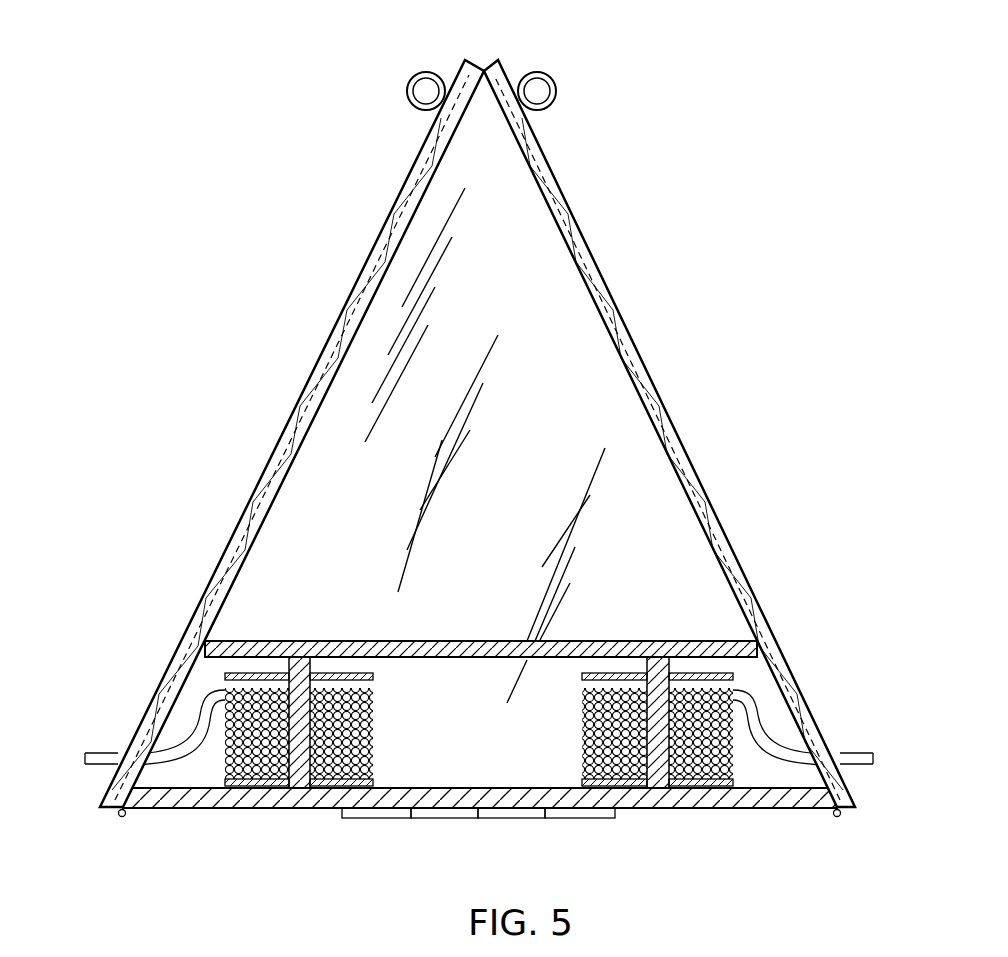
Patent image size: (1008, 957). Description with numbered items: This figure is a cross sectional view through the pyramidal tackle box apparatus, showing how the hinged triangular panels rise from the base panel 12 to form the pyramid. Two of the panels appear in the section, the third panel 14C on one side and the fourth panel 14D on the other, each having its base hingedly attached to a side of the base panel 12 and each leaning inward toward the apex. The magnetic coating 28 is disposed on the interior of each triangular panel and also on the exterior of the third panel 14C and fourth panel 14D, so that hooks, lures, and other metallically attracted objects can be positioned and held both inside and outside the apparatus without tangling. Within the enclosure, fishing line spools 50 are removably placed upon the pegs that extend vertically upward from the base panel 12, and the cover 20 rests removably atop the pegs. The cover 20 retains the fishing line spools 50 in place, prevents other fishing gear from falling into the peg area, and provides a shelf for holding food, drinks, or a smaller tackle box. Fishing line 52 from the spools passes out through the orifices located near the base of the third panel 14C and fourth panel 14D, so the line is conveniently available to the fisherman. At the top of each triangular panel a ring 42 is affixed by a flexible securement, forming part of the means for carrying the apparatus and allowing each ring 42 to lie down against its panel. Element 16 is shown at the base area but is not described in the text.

The base panel 12 is at (765, 809).
The third panel 14C is at (356, 244).
The fourth panel 14D is at (567, 164).
The mounting strip and fasteners 16 is at (122, 817).
The cover 20 is at (667, 641).
The magnetic coating 28 is at (600, 232).
The ring 42 is at (425, 72).
The fishing line spools 50 is at (562, 748).
The fishing line 52 is at (90, 753).